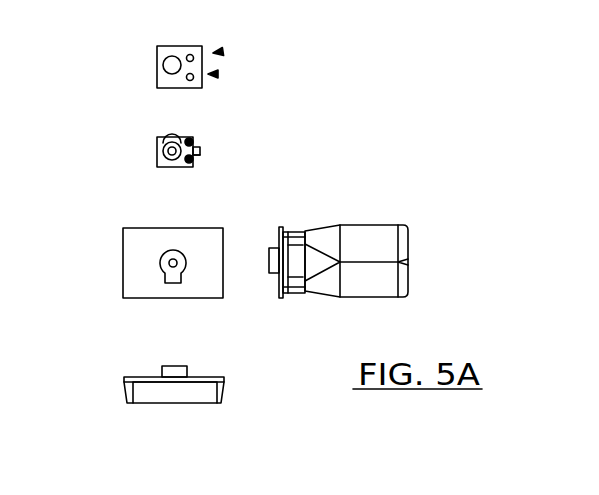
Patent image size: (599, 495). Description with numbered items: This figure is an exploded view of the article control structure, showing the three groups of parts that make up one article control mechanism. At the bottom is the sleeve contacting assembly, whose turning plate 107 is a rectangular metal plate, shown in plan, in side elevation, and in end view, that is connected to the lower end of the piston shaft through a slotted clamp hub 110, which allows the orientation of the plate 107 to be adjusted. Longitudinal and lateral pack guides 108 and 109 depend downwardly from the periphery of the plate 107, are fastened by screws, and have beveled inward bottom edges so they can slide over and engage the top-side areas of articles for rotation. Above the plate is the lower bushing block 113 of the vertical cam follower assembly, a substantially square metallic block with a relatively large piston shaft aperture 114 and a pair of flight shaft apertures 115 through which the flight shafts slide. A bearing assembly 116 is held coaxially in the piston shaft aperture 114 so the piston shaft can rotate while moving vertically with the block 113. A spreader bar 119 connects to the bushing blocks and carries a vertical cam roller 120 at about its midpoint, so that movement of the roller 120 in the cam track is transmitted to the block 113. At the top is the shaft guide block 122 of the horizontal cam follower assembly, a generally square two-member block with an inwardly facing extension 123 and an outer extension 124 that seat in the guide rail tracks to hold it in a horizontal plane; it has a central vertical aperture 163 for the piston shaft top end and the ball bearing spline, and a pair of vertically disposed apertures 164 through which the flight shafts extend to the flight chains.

The turning plate 107 is at (137, 256).
The longitudinal pack guide 108 is at (290, 229).
The lateral pack guide 109 is at (292, 258).
The slotted clamp hub 110 is at (187, 252).
The lower bushing block 113 is at (158, 160).
The piston shaft aperture 114 is at (167, 142).
The flight shaft apertures 115 is at (195, 140).
The bearing assembly 116 is at (163, 151).
The spreader bar 119 is at (201, 156).
The vertical cam roller 120 is at (201, 147).
The shaft guide block 122 is at (218, 52).
The inwardly facing extension 123 is at (217, 74).
The outer extension 124 is at (160, 82).
The vertical aperture 163 is at (165, 62).
The vertically disposed apertures 164 is at (192, 55).